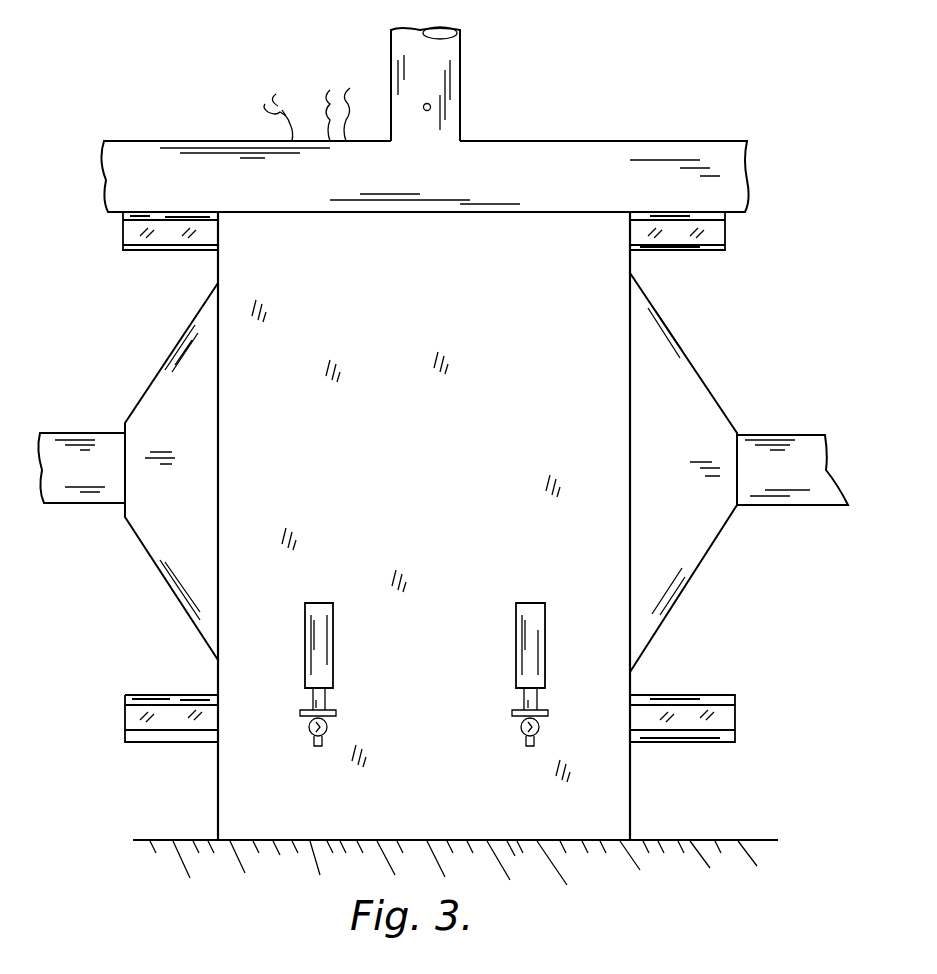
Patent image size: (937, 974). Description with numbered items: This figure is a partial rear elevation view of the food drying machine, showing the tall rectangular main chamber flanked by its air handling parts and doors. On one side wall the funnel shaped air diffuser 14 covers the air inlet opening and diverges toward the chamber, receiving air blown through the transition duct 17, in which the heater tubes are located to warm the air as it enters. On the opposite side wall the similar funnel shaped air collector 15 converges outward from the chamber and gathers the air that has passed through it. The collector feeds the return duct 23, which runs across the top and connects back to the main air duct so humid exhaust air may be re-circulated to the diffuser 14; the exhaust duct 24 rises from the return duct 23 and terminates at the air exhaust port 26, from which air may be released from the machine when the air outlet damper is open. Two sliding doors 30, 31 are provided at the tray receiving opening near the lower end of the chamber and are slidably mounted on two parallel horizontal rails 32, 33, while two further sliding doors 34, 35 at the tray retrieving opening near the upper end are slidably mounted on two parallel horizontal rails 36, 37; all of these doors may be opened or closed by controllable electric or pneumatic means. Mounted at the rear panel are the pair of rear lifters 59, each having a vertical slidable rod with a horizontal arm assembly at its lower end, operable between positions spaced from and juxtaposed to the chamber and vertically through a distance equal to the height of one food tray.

The funnel shaped air diffuser 14 is at (173, 350).
The funnel shaped air collector 15 is at (688, 358).
The transition duct 17 is at (88, 433).
The return duct 23 is at (651, 150).
The exhaust duct 24 is at (455, 72).
The air exhaust port 26 is at (446, 33).
The sliding door 30 is at (125, 718).
The sliding door 31 is at (725, 722).
The horizontal rail 32 is at (183, 696).
The horizontal rail 33 is at (678, 742).
The sliding door 34 is at (157, 238).
The sliding door 35 is at (720, 233).
The horizontal rail 36 is at (123, 215).
The horizontal rail 37 is at (725, 250).
The rear lifter 59 is at (322, 610).